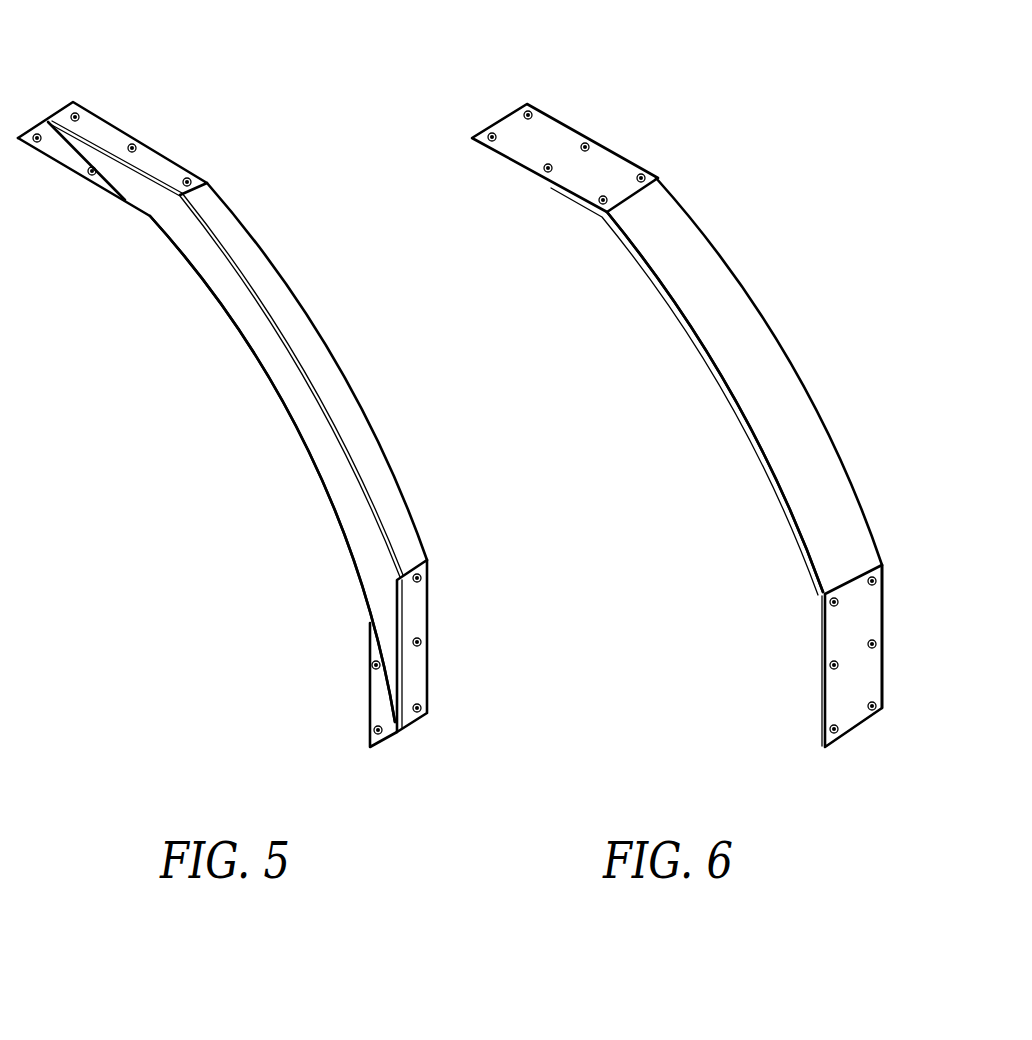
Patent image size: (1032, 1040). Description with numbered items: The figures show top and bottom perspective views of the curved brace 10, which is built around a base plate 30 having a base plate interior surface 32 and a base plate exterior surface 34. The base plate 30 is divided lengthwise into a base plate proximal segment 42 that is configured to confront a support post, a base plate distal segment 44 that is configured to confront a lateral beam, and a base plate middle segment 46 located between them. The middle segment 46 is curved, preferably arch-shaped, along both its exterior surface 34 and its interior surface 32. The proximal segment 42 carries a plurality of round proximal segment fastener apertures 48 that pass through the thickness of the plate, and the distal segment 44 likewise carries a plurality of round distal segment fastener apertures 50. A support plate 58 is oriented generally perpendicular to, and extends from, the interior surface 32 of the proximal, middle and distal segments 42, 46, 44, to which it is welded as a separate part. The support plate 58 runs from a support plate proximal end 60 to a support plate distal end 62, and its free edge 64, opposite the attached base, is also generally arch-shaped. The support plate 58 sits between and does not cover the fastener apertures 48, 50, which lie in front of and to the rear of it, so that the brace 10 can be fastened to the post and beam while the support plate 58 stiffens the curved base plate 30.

In FIG. 5, the curved brace 10 is at (240, 182).
In FIG. 6, the curved brace 10 is at (788, 132).
In FIG. 5, the base plate 30 is at (249, 349).
In FIG. 6, the base plate 30 is at (703, 277).
In FIG. 5, the base plate interior surface 32 is at (163, 180).
In FIG. 6, the base plate exterior surface 34 is at (580, 185).
In FIG. 5, the base plate proximal segment 42 is at (422, 680).
In FIG. 6, the base plate proximal segment 42 is at (870, 617).
In FIG. 5, the base plate distal segment 44 is at (107, 126).
In FIG. 6, the base plate distal segment 44 is at (565, 142).
In FIG. 5, the base plate middle segment 46 is at (360, 435).
In FIG. 5, the proximal segment fastener apertures 48 is at (423, 578).
In FIG. 6, the proximal segment fastener apertures 48 is at (834, 665).
In FIG. 5, the distal segment fastener apertures 50 is at (54, 112).
In FIG. 6, the distal segment fastener apertures 50 is at (527, 103).
In FIG. 5, the support plate 58 is at (230, 300).
In FIG. 6, the support plate 58 is at (792, 528).
In FIG. 5, the support plate proximal end 60 is at (393, 603).
In FIG. 5, the support plate distal end 62 is at (145, 192).
In FIG. 5, the free edge 64 is at (307, 453).